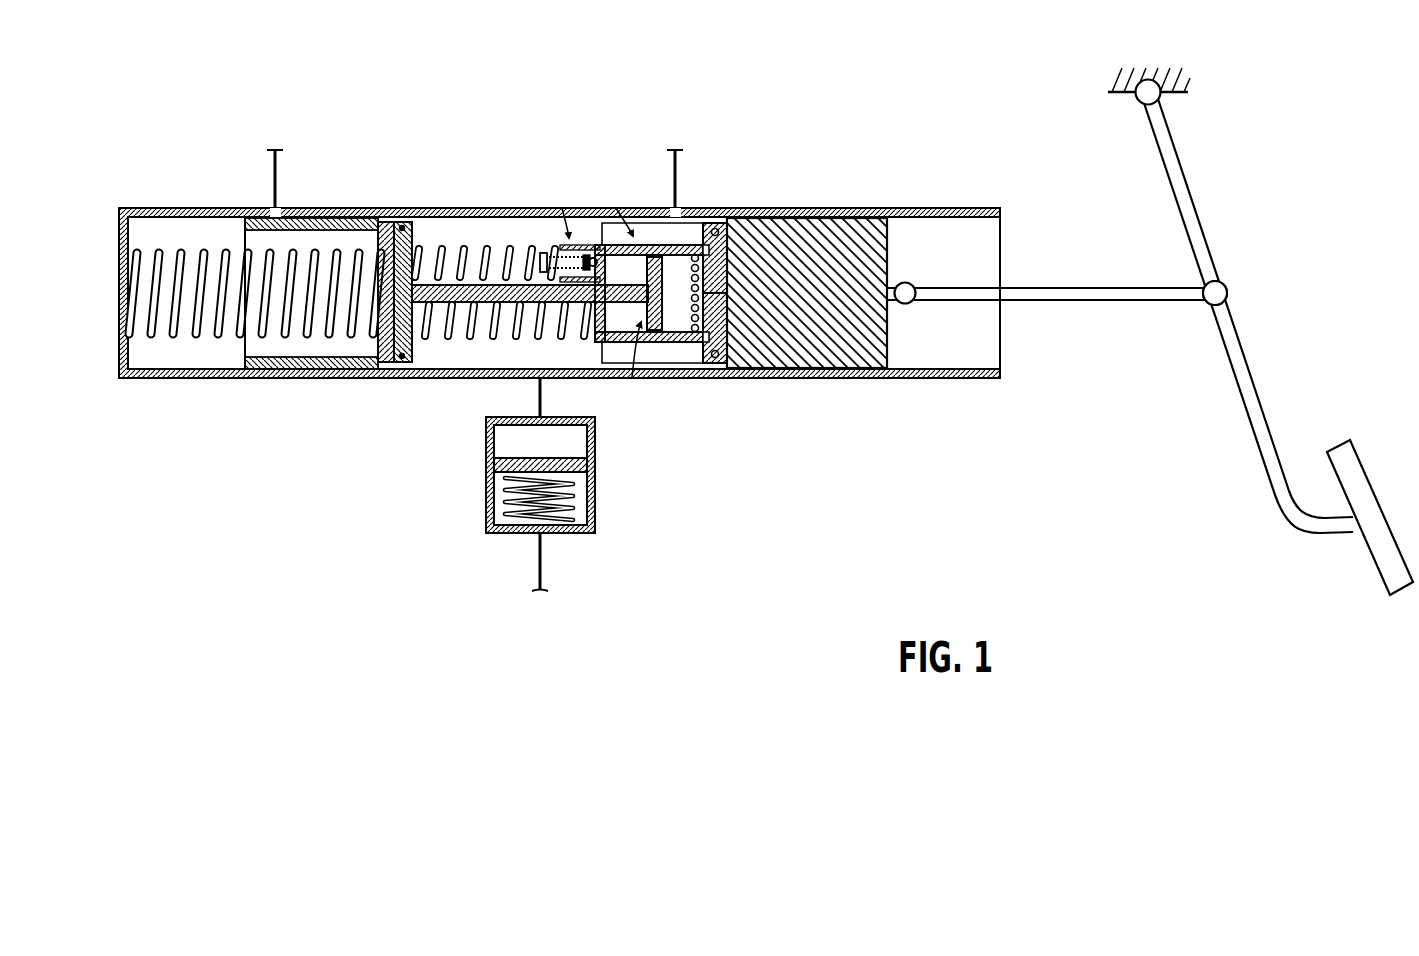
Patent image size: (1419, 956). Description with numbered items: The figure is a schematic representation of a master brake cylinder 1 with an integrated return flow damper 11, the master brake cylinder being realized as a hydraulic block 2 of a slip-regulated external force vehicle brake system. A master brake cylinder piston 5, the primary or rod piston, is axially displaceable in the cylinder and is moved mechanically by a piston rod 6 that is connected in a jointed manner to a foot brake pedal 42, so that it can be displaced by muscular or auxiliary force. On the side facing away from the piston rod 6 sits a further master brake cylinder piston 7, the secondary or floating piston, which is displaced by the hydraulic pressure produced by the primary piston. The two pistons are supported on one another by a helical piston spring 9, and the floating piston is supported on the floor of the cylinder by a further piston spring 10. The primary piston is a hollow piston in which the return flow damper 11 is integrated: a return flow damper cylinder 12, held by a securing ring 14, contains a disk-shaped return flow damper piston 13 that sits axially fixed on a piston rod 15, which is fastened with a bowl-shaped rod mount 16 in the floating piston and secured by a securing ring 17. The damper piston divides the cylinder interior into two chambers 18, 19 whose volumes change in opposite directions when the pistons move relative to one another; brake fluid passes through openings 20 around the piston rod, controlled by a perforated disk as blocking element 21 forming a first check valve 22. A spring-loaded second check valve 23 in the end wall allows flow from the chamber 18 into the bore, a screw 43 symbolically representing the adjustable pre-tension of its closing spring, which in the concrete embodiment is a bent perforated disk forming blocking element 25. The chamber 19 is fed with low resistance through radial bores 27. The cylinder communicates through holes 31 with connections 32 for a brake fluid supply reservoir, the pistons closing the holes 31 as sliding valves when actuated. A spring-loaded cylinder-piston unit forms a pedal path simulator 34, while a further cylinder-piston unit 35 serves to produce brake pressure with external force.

The master brake cylinder 1 is at (493, 208).
The hydraulic block 2 is at (202, 350).
The master brake cylinder piston 5 is at (818, 337).
The piston rod 6 is at (1102, 302).
The further master brake cylinder piston 7 is at (384, 286).
The piston spring 9 is at (501, 298).
The piston spring 10 is at (284, 360).
The return flow damper 11 is at (628, 245).
The return flow damper cylinder 12 is at (721, 282).
The return flow damper piston 13 is at (727, 368).
The securing ring 14 is at (722, 210).
The piston rod 15 is at (470, 240).
The rod mount 16 is at (388, 208).
The securing ring 17 is at (400, 208).
The chamber 18 is at (628, 340).
The chamber 19 is at (705, 230).
The openings 20 is at (654, 225).
The blocking element 21 is at (616, 208).
The first check valve 22 is at (632, 377).
The second check valve 23 is at (562, 208).
The blocking element 25 is at (593, 244).
The radial bores 27 is at (730, 345).
The holes 31 is at (282, 208).
The connections 32 is at (268, 167).
The pedal path simulator 34 is at (534, 522).
The cylinder-piston unit 35 is at (540, 489).
The foot brake pedal 42 is at (1388, 557).
The screw 43 is at (554, 201).